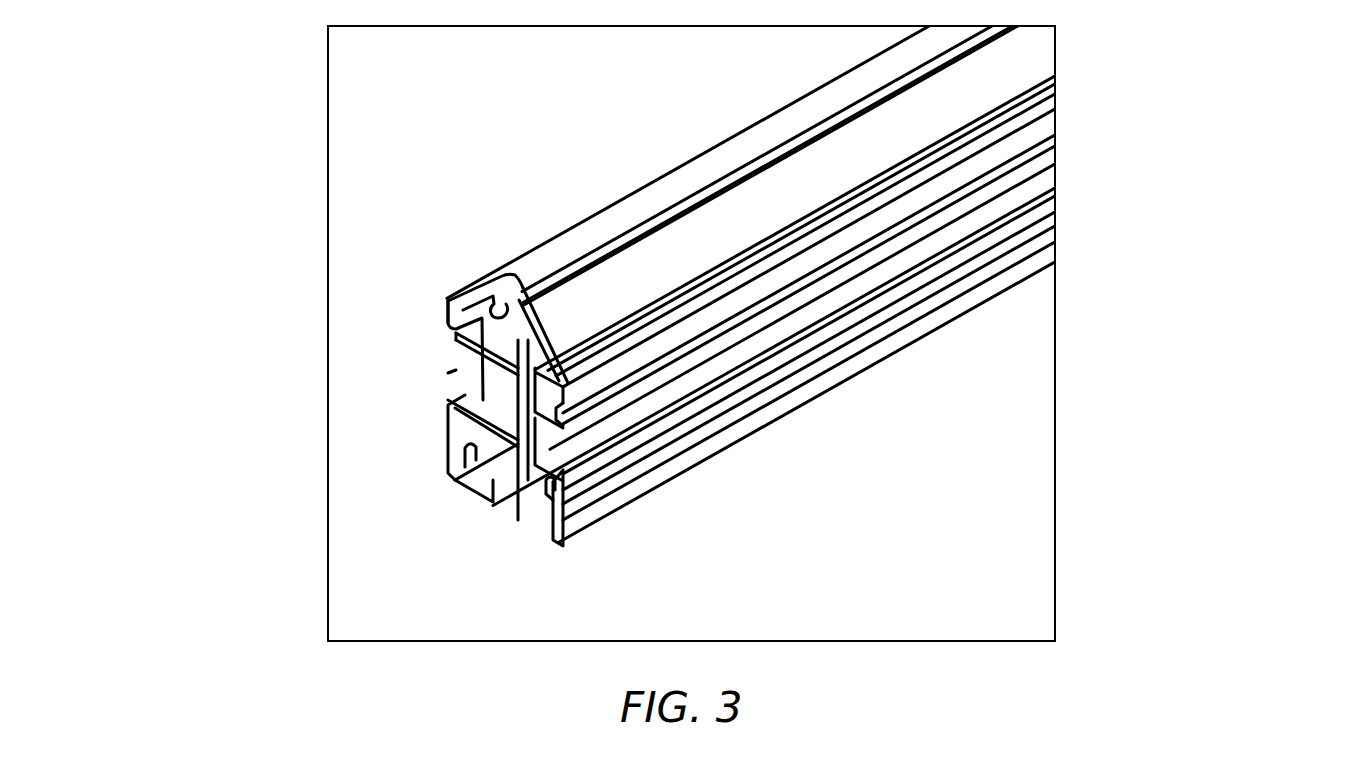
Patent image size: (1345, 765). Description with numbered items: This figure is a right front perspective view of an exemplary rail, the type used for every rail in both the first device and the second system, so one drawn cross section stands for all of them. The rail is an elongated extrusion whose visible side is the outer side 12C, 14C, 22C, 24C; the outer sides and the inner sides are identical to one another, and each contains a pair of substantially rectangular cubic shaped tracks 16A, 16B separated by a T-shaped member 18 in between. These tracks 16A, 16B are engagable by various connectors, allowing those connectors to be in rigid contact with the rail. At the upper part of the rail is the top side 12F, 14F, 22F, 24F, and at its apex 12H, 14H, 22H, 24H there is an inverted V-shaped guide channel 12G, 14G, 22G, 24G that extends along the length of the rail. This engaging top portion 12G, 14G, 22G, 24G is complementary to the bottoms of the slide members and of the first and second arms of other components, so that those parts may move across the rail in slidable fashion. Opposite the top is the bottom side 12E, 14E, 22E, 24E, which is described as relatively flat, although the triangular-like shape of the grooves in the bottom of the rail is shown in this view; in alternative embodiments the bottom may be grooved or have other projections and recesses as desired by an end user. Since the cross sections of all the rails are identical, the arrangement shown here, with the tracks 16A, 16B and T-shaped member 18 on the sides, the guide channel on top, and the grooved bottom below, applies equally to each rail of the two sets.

The outer side 12C is at (917, 309).
The outer side 14C is at (917, 309).
The outer side 22C is at (917, 309).
The outer side 24C is at (1017, 192).
The bottom side 12E is at (478, 536).
The bottom side 14E is at (478, 536).
The bottom side 22E is at (478, 536).
The bottom side 24E is at (533, 527).
The top side 12F is at (274, 306).
The top side 14F is at (274, 306).
The top side 22F is at (274, 306).
The top side 24F is at (440, 279).
The inverted V-shaped guide channel 12G is at (732, 166).
The inverted V-shaped guide channel 14G is at (732, 166).
The inverted V-shaped guide channel 22G is at (732, 166).
The inverted V-shaped guide channel 24G is at (664, 247).
The apex 12H is at (483, 243).
The apex 14H is at (483, 243).
The apex 22H is at (483, 243).
The apex 24H is at (515, 272).
The track 16A is at (447, 400).
The track 16B is at (445, 344).
The T-shaped member 18 is at (445, 373).